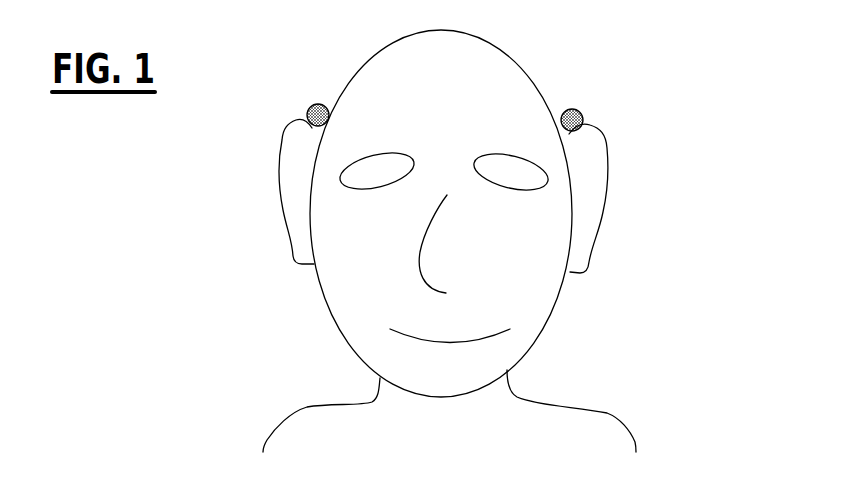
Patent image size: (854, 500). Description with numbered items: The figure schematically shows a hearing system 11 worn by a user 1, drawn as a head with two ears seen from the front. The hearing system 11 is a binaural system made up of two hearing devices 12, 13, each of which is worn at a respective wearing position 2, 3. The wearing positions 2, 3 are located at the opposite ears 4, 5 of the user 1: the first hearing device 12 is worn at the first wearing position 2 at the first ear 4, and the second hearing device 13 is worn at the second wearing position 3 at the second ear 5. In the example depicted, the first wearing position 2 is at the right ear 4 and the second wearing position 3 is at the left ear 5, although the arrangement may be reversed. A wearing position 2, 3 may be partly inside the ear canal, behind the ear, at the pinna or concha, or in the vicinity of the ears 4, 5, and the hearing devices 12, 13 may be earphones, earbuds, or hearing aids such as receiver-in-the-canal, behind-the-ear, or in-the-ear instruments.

The user 1 is at (613, 344).
The hearing system 11 is at (584, 42).
The first wearing position 2 is at (256, 127).
The second wearing position 3 is at (634, 136).
The first ear 4 is at (292, 212).
The second ear 5 is at (590, 224).
The first hearing device 12 is at (311, 107).
The second hearing device 13 is at (581, 114).